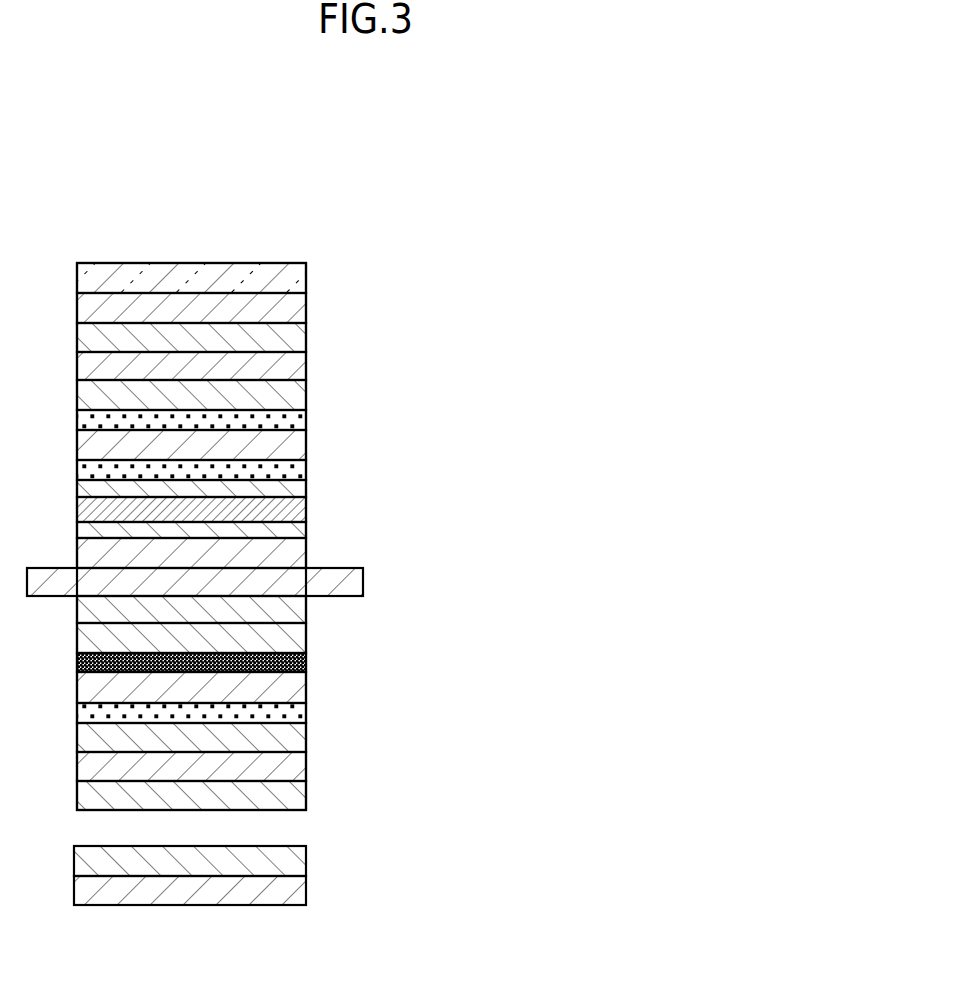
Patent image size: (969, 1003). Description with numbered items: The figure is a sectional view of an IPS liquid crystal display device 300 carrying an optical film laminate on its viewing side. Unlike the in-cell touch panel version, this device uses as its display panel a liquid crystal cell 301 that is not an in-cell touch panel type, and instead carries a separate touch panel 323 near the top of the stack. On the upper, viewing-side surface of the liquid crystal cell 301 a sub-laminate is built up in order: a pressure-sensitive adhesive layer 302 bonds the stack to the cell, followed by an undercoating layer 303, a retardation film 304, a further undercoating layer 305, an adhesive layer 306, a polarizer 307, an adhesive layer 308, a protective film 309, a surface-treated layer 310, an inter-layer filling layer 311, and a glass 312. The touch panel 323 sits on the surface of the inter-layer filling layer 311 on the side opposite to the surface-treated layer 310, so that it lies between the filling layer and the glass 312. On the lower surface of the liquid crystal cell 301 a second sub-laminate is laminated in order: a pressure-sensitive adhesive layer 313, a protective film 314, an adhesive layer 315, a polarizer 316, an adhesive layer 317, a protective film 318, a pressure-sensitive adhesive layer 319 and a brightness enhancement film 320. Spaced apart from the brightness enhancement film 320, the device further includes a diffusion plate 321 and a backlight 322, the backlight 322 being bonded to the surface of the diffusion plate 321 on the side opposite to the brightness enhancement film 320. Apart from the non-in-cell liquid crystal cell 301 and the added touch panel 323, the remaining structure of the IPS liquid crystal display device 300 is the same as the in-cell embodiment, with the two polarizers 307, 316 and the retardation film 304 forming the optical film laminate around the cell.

The IPS liquid crystal display device 300 is at (224, 216).
The glass 312 is at (306, 269).
The touch panel 323 is at (306, 299).
The inter-layer filling layer 311 is at (306, 329).
The surface-treated layer 310 is at (306, 358).
The protective film 309 is at (306, 386).
The adhesive layer 308 is at (306, 414).
The polarizer 307 is at (306, 435).
The adhesive layer 306 is at (306, 458).
The undercoating layer 305 is at (306, 482).
The retardation film 304 is at (306, 501).
The undercoating layer 303 is at (306, 525).
The pressure-sensitive adhesive layer 302 is at (306, 543).
The liquid crystal cell 301 is at (363, 581).
The pressure-sensitive adhesive layer 313 is at (306, 606).
The protective film 314 is at (306, 633).
The adhesive layer 315 is at (306, 661).
The polarizer 316 is at (306, 684).
The adhesive layer 317 is at (306, 710).
The protective film 318 is at (306, 735).
The pressure-sensitive adhesive layer 319 is at (306, 762).
The brightness enhancement film 320 is at (306, 792).
The diffusion plate 321 is at (306, 858).
The backlight 322 is at (306, 888).